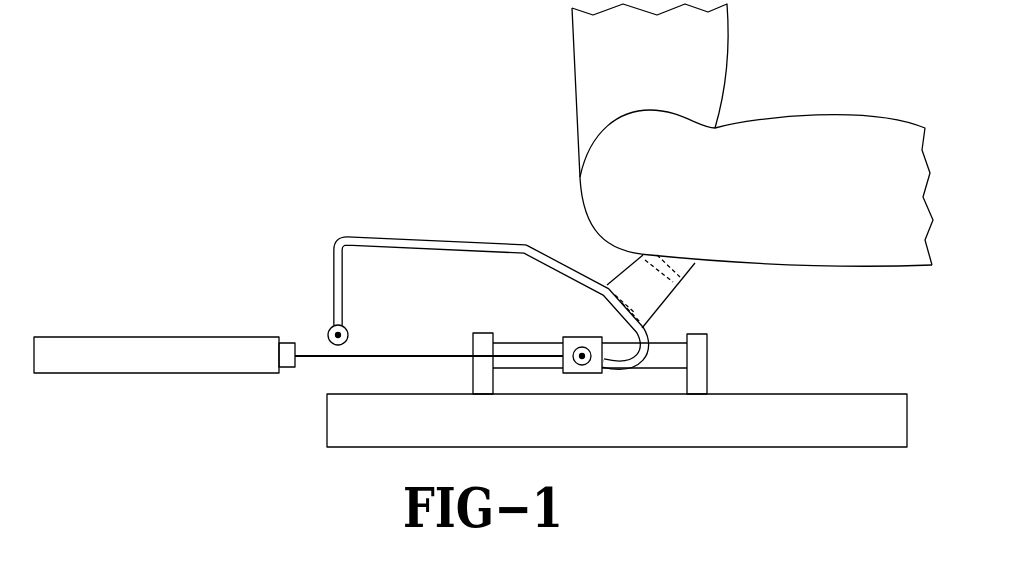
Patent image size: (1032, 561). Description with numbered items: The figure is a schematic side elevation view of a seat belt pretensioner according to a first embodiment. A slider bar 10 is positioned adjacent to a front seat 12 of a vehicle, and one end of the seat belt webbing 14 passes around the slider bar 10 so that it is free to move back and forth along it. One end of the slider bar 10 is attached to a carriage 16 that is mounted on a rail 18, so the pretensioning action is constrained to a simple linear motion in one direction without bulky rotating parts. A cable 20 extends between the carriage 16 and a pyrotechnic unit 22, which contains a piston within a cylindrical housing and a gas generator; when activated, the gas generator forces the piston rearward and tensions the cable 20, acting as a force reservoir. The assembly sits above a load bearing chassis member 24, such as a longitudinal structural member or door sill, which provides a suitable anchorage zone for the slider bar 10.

The slider bar 10 is at (435, 240).
The front seat 12 is at (763, 210).
The seat belt webbing 14 is at (673, 270).
The carriage 16 is at (578, 337).
The rail 18 is at (670, 360).
The cable 20 is at (318, 355).
The pyrotechnic unit 22 is at (143, 337).
The load bearing chassis member 24 is at (692, 448).